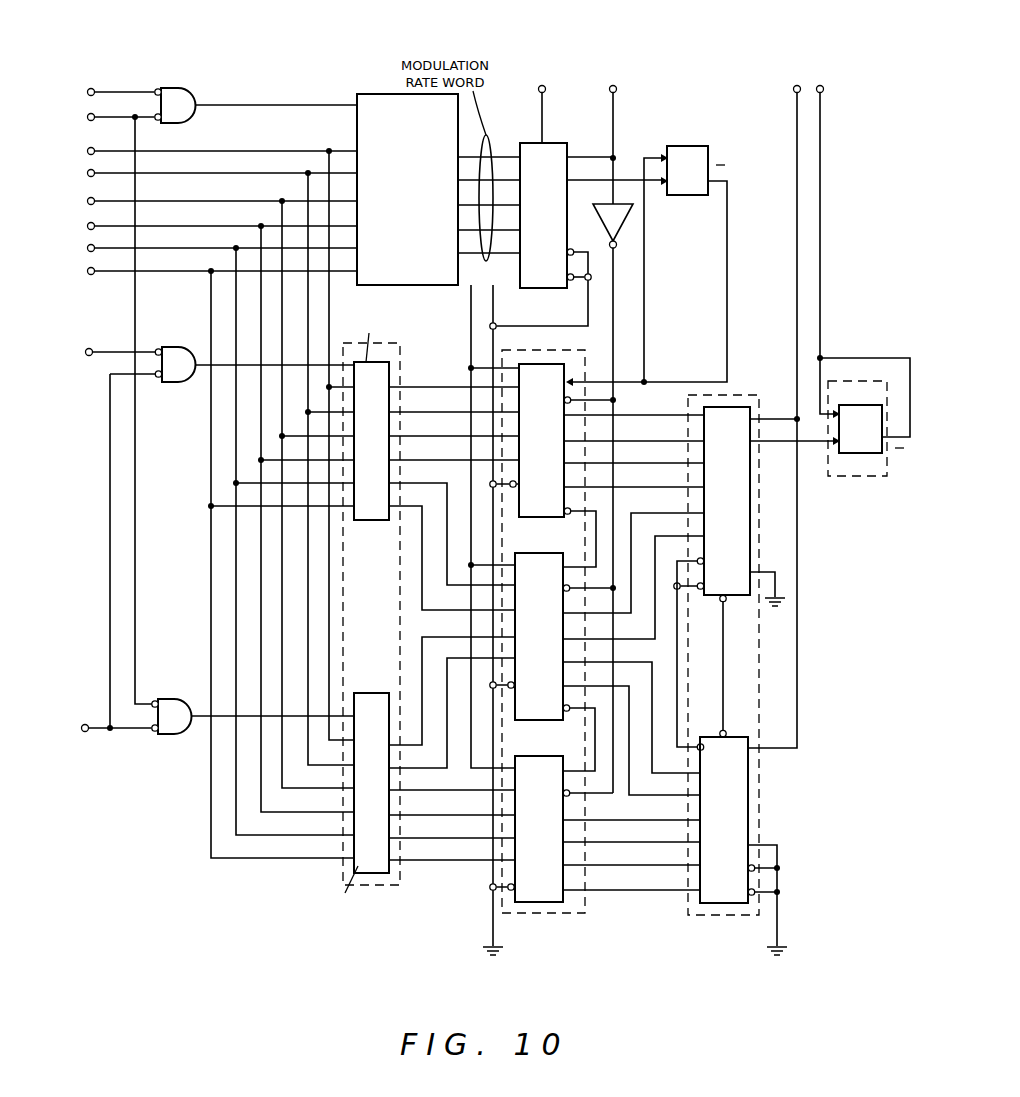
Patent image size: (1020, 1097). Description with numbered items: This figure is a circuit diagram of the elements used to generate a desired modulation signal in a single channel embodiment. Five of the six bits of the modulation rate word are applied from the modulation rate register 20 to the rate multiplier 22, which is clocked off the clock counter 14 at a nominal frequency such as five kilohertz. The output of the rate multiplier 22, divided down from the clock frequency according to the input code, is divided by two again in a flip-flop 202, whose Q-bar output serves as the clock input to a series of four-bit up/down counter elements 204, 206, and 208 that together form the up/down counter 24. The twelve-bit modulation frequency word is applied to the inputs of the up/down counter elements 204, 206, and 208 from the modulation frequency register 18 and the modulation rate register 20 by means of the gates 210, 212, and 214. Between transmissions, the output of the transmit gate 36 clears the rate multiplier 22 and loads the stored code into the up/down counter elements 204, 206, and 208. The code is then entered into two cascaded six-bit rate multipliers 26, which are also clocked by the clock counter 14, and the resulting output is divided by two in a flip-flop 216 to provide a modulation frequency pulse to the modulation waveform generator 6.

The gate 210 is at (175, 89).
The gate 212 is at (178, 347).
The gate 214 is at (175, 699).
The modulation rate register 20 is at (393, 94).
The rate multiplier 22 is at (549, 143).
The clock counter 14 is at (540, 86).
The transmit gate 36 is at (616, 87).
The modulation waveform generator 6 is at (823, 88).
The flip-flop 202 is at (684, 146).
The modulation frequency register 18 is at (403, 357).
The up/down counter 24 is at (520, 344).
The up/down counter element 204 is at (565, 519).
The up/down counter element 206 is at (565, 722).
The up/down counter element 208 is at (527, 905).
The rate multipliers 26 is at (732, 395).
The flip-flop 216 is at (867, 477).